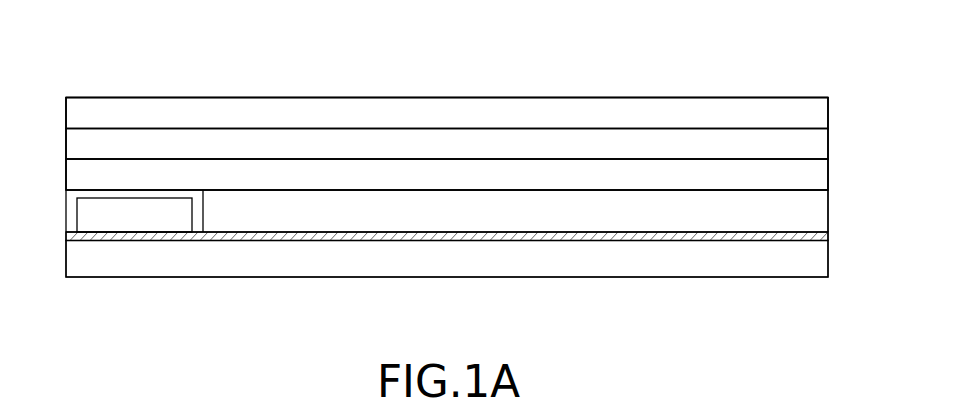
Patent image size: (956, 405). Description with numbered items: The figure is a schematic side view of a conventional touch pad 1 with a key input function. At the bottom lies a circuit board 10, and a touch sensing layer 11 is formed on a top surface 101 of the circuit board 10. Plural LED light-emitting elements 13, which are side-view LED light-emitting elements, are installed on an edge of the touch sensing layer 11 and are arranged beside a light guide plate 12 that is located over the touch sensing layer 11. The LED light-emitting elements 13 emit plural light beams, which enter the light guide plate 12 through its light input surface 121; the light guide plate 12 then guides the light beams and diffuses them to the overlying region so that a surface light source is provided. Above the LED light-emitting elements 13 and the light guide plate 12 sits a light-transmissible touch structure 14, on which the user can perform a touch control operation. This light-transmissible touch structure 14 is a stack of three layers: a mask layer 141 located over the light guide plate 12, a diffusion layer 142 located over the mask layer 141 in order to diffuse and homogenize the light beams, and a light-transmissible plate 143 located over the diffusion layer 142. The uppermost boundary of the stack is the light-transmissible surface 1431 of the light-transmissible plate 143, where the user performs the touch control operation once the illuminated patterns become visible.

The touch pad 1 is at (226, 51).
The circuit board 10 is at (635, 263).
The top surface 101 is at (533, 242).
The touch sensing layer 11 is at (715, 237).
The light guide plate 12 is at (810, 212).
The light input surface 121 is at (205, 212).
The LED light-emitting element 13 is at (88, 209).
The light-transmissible touch structure 14 is at (447, 144).
The mask layer 141 is at (652, 175).
The diffusion layer 142 is at (503, 143).
The light-transmissible plate 143 is at (447, 107).
The light-transmissible surface 1431 is at (143, 97).